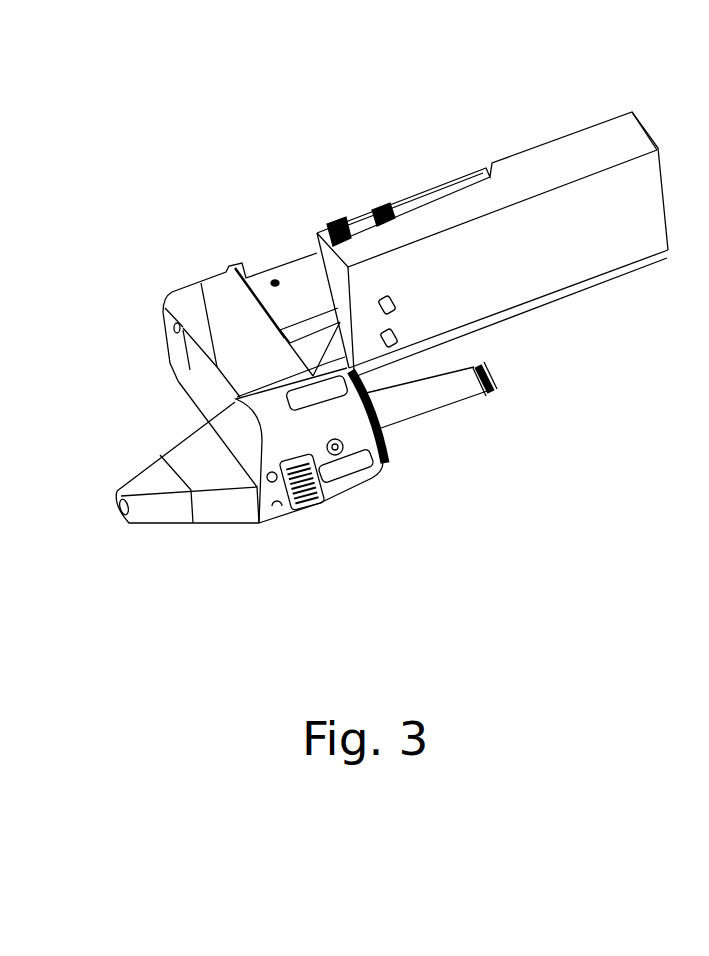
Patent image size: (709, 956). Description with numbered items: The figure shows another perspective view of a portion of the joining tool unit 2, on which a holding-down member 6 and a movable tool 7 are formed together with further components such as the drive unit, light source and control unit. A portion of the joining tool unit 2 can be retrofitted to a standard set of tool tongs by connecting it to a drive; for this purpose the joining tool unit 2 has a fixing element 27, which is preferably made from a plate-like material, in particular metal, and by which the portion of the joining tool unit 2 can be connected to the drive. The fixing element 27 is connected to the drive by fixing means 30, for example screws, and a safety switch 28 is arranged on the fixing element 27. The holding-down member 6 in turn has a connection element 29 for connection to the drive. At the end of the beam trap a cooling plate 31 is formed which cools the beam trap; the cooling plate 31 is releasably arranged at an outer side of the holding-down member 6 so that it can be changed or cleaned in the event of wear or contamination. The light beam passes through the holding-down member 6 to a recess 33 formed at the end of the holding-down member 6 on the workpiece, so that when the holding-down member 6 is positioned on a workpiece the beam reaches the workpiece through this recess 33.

The joining tool unit 2 is at (456, 155).
The fixing element 27 is at (583, 156).
The safety switch 28 is at (312, 258).
The fixing means 30 is at (396, 302).
The holding-down member 6 is at (172, 441).
The movable tool 7 is at (447, 393).
The connection element 29 is at (389, 455).
The cooling plate 31 is at (307, 508).
The recess 33 is at (118, 515).